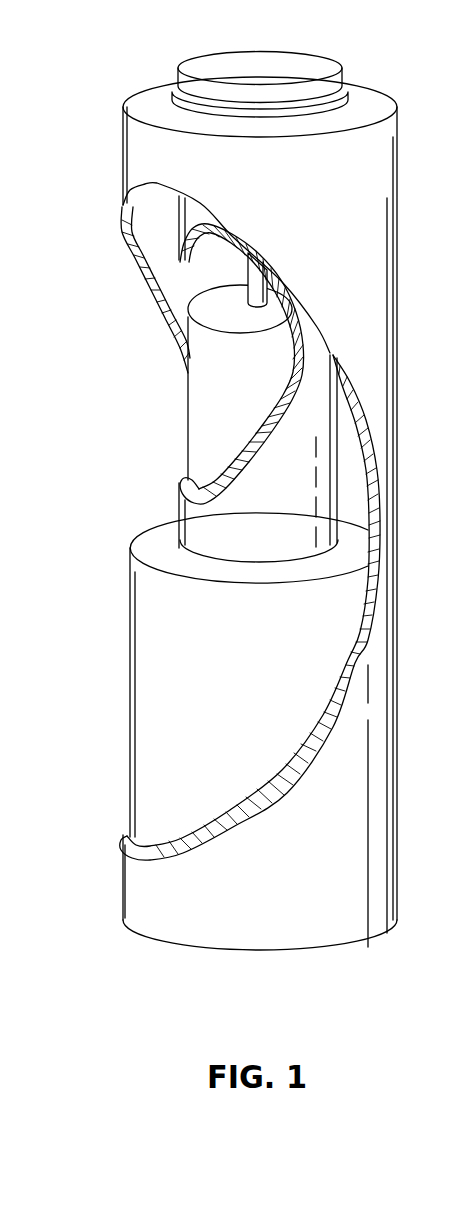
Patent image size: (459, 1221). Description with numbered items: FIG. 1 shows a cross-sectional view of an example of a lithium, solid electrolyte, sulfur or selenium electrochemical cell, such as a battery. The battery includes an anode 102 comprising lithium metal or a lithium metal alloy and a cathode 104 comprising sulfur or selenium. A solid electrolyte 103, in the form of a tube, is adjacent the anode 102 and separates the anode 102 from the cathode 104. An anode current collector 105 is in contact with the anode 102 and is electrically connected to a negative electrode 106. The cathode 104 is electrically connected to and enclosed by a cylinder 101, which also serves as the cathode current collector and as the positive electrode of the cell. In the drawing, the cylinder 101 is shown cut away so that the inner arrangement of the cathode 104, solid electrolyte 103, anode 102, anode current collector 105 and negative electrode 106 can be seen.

The cylinder 101 is at (121, 893).
The anode 102 is at (188, 418).
The solid electrolyte 103 is at (180, 511).
The cathode 104 is at (130, 684).
The anode current collector 105 is at (246, 276).
The negative electrode 106 is at (310, 52).